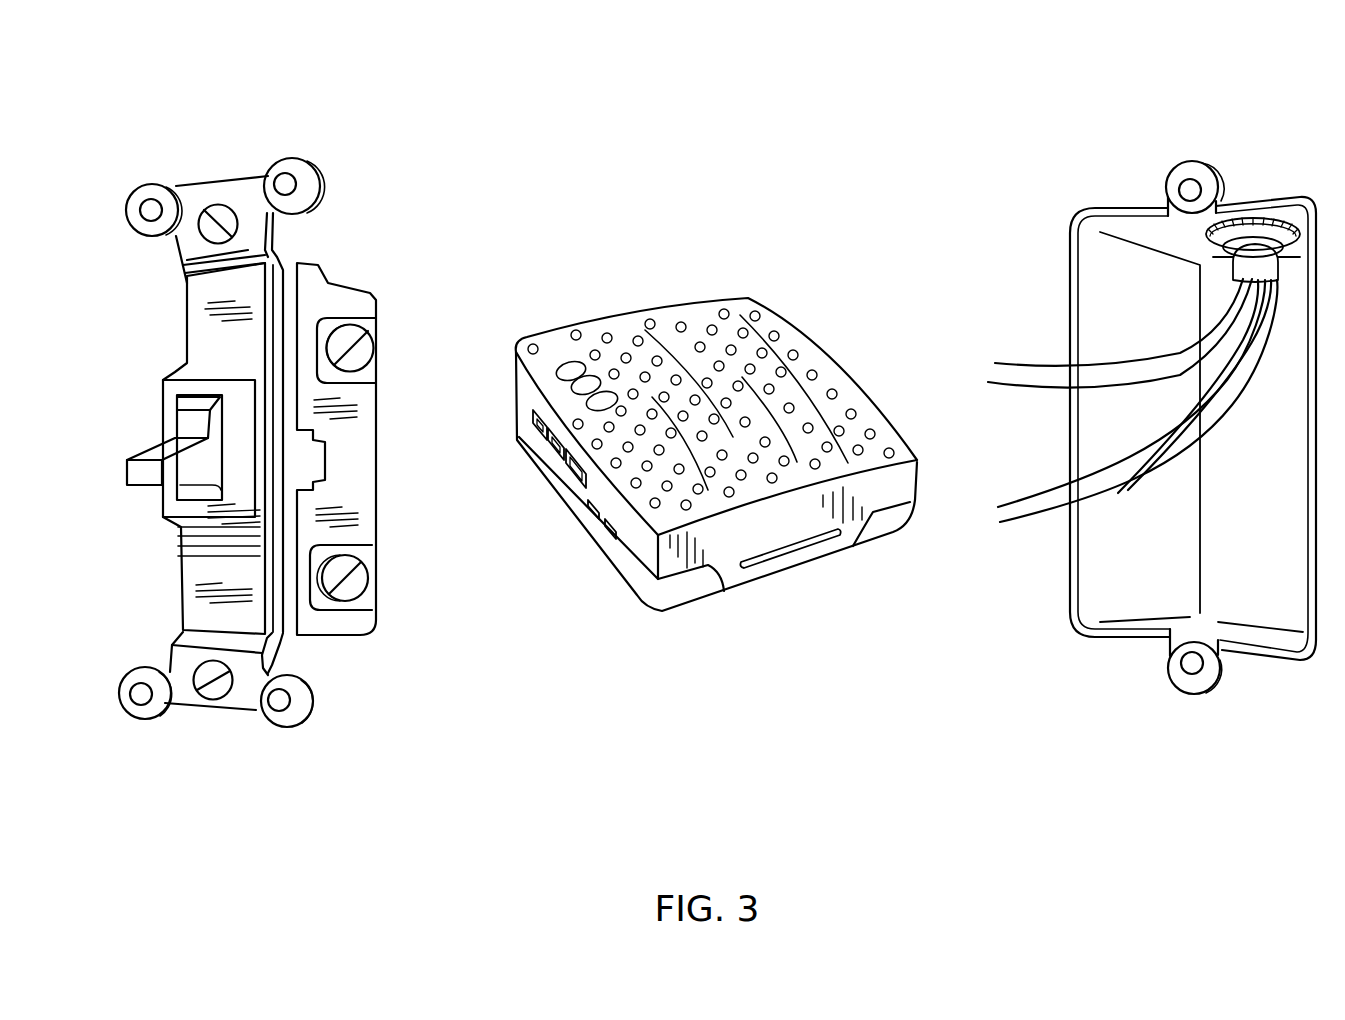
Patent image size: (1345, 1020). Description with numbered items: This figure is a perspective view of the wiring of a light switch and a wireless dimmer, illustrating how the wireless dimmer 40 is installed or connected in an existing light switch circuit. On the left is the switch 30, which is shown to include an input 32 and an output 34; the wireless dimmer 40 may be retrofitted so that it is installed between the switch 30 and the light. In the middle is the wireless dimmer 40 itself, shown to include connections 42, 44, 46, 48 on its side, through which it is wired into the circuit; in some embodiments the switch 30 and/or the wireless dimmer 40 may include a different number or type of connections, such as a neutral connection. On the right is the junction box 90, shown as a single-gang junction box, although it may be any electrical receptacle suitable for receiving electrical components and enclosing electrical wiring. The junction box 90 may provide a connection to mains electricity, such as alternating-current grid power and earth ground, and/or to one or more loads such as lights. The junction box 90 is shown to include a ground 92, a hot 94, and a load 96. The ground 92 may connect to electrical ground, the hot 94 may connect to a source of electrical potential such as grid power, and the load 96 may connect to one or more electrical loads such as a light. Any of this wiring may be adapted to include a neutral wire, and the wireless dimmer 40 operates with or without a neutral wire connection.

The switch 30 is at (230, 127).
The input 32 is at (377, 348).
The output 34 is at (377, 577).
The wireless dimmer 40 is at (584, 211).
The connection 42 is at (537, 423).
The connection 44 is at (607, 520).
The connection 46 is at (557, 440).
The connection 48 is at (572, 460).
The junction box 90 is at (1104, 131).
The ground 92 is at (1008, 377).
The hot 94 is at (1007, 510).
The load 96 is at (1118, 495).